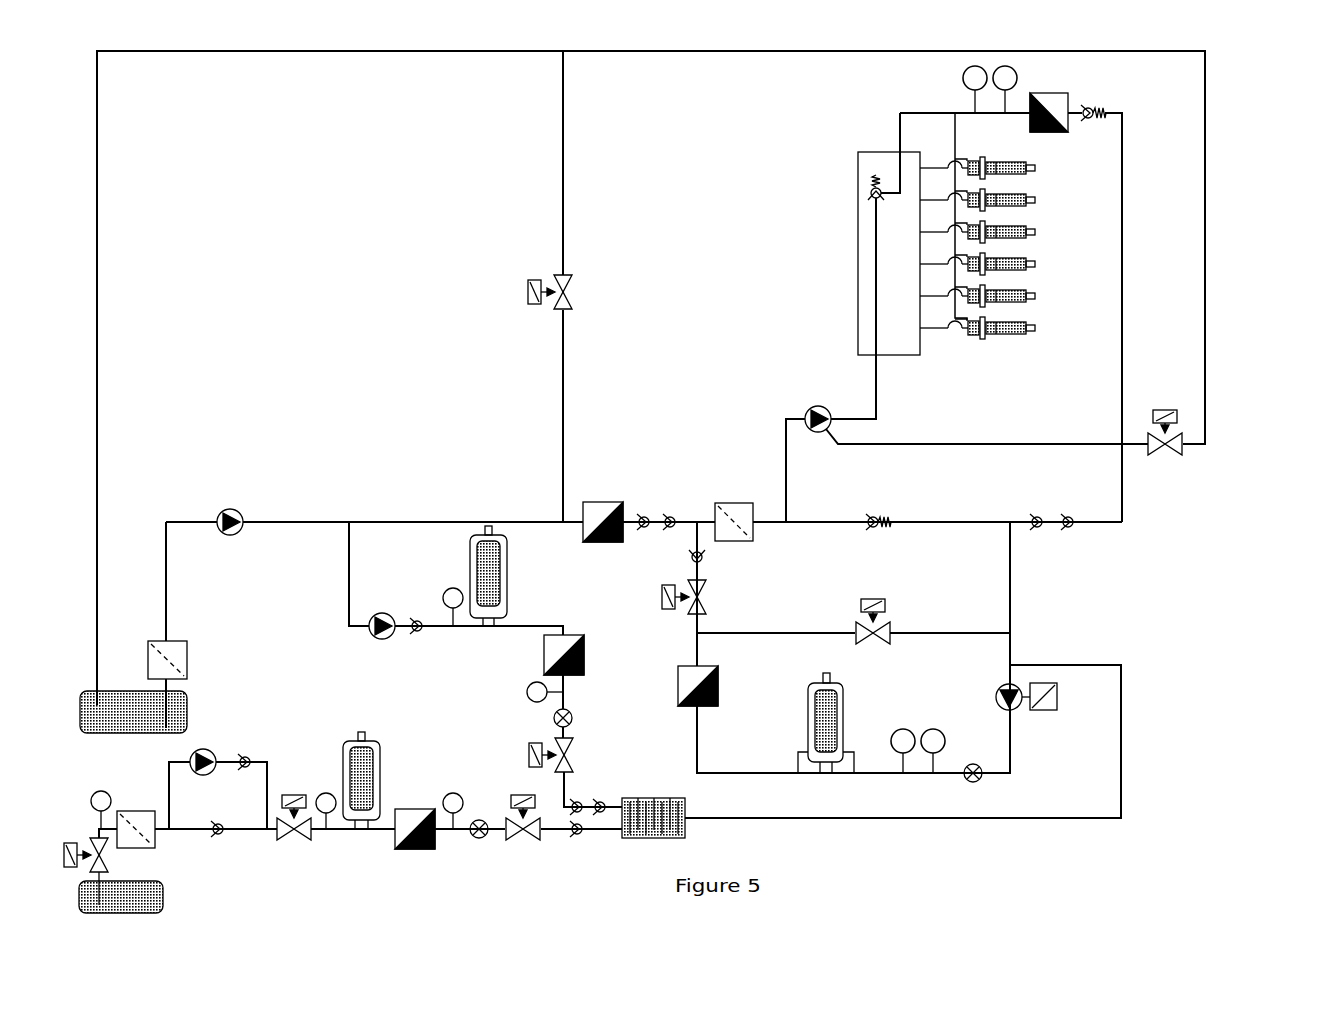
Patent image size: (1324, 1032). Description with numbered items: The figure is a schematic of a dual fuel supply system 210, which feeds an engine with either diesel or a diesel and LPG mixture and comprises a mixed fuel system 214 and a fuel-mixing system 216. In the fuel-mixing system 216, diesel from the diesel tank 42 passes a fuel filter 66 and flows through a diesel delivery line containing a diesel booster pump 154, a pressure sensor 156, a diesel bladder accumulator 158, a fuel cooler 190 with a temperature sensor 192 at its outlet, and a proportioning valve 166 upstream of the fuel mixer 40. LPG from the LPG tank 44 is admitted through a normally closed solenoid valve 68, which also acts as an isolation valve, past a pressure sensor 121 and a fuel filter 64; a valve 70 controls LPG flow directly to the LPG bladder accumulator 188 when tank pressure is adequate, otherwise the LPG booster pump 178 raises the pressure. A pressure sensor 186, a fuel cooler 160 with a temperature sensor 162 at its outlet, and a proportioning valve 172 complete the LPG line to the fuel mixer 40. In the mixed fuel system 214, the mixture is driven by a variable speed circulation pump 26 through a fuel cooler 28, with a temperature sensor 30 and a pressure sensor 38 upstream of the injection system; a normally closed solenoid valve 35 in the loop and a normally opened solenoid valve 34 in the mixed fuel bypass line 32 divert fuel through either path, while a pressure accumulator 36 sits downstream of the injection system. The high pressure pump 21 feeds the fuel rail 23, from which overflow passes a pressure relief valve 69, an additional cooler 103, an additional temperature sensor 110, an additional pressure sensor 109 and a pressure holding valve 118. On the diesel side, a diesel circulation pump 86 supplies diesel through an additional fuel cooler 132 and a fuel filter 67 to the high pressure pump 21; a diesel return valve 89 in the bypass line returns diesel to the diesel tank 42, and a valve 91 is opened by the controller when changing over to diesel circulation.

The high pressure pump 21 is at (817, 405).
The fuel rail 23 is at (911, 275).
The circulation pump 26 is at (1050, 671).
The fuel cooler 28 is at (678, 683).
The temperature sensor 30 is at (896, 730).
The mixed fuel bypass line 32 is at (829, 621).
The normally opened solenoid valve 34 is at (888, 600).
The normally closed solenoid valve 35 is at (707, 595).
The pressure accumulator 36 is at (808, 728).
The pressure sensor 38 is at (937, 729).
The fuel mixer 40 is at (648, 822).
The diesel tank 42 is at (133, 712).
The LPG tank 44 is at (121, 897).
The fuel filter 64 is at (140, 810).
The fuel filter 66 is at (158, 640).
The fuel filter 67 is at (733, 502).
The normally closed solenoid valve 68 is at (73, 844).
The pressure relief valve 69 is at (865, 182).
The normally closed solenoid valve 70 is at (295, 842).
The diesel circulation pump 86 is at (232, 508).
The diesel return valve 89 is at (573, 283).
The valve 91 is at (1165, 456).
The additional cooler 103 is at (1070, 96).
The additional pressure sensor 109 is at (1018, 76).
The additional temperature sensor 110 is at (962, 76).
The pressure holding valve 118 is at (1106, 108).
The pressure sensor 121 is at (100, 790).
The additional fuel cooler 132 is at (607, 500).
The diesel booster pump 154 is at (368, 634).
The pressure sensor 156 is at (450, 586).
The diesel bladder accumulator 158 is at (510, 566).
The fuel cooler 160 is at (408, 808).
The temperature sensor 162 is at (456, 792).
The proportioning valve 166 is at (573, 752).
The proportioning valve 172 is at (528, 839).
The LPG booster pump 178 is at (210, 748).
The pressure sensor 186 is at (325, 792).
The LPG bladder accumulator 188 is at (370, 738).
The fuel cooler 190 is at (585, 634).
The temperature sensor 192 is at (527, 690).
The dual fuel supply system 210 is at (1243, 270).
The mixed fuel system 214 is at (1240, 574).
The fuel-mixing system 216 is at (469, 862).